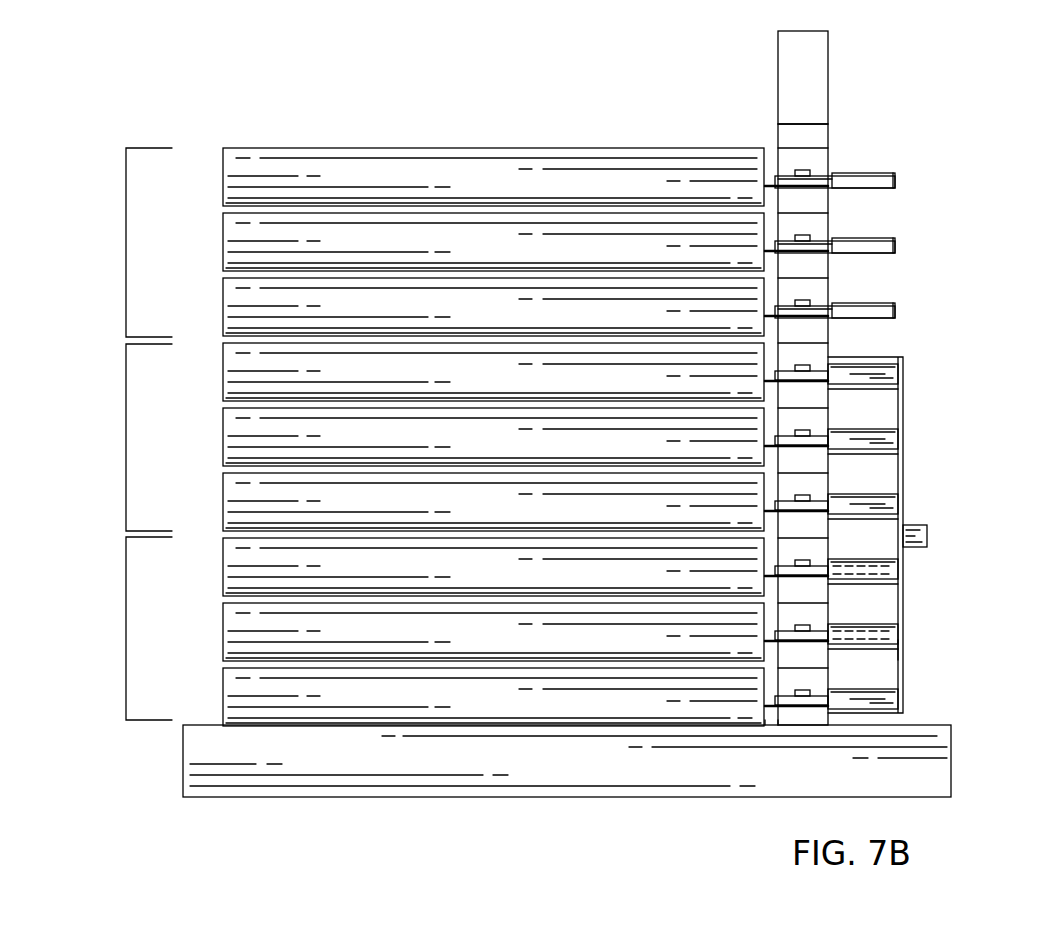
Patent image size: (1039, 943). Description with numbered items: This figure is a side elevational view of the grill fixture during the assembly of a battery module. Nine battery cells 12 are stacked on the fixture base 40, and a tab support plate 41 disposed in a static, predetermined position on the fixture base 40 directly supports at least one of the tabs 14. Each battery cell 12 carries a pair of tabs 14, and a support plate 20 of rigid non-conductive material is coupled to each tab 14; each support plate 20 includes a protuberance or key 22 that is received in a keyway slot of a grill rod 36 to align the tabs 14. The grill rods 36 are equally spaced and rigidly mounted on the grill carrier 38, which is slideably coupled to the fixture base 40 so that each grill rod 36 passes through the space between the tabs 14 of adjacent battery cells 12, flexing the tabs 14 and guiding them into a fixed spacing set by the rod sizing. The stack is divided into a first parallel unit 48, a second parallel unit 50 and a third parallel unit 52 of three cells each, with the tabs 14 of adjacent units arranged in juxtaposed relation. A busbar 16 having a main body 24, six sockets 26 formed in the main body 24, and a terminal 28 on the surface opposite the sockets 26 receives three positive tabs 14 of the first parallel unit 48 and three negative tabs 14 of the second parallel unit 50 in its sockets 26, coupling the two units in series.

The battery cell 12 is at (222, 179).
The tab 14 is at (897, 179).
The busbar 16 is at (912, 649).
The support plate 20 is at (845, 181).
The key 22 is at (810, 170).
The main body 24 is at (903, 455).
The socket 26 is at (895, 357).
The terminal 28 is at (927, 537).
The grill rod 36 is at (817, 137).
The grill carrier 38 is at (828, 57).
The fixture base 40 is at (951, 758).
The tab support plate 41 is at (797, 720).
The first parallel unit 48 is at (126, 620).
The second parallel unit 50 is at (126, 432).
The third parallel unit 52 is at (126, 245).